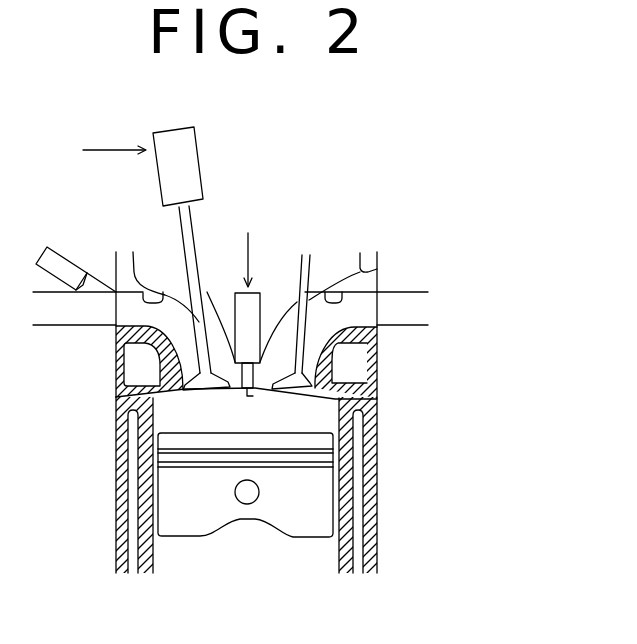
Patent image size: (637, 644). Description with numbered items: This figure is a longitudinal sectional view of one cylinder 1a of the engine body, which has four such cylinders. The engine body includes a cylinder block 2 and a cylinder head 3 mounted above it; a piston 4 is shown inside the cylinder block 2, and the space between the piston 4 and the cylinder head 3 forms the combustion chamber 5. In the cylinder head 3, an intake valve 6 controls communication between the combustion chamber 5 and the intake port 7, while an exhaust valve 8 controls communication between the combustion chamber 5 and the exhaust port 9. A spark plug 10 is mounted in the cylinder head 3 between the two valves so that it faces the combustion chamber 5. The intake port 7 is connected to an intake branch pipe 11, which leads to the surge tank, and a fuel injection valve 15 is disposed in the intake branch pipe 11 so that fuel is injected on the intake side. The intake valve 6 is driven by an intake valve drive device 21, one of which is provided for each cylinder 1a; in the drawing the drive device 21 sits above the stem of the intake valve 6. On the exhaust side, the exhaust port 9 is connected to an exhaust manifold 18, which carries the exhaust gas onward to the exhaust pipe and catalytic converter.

The cylinder 1a is at (505, 226).
The cylinder block 2 is at (113, 556).
The cylinder head 3 is at (382, 263).
The piston 4 is at (190, 524).
The combustion chamber 5 is at (318, 414).
The intake valve 6 is at (197, 280).
The intake port 7 is at (149, 288).
The exhaust valve 8 is at (318, 272).
The exhaust port 9 is at (340, 283).
The spark plug 10 is at (267, 288).
The intake branch pipe 11 is at (73, 328).
The fuel injection valve 15 is at (60, 258).
The exhaust manifold 18 is at (420, 290).
The intake valve drive device 21 is at (192, 147).